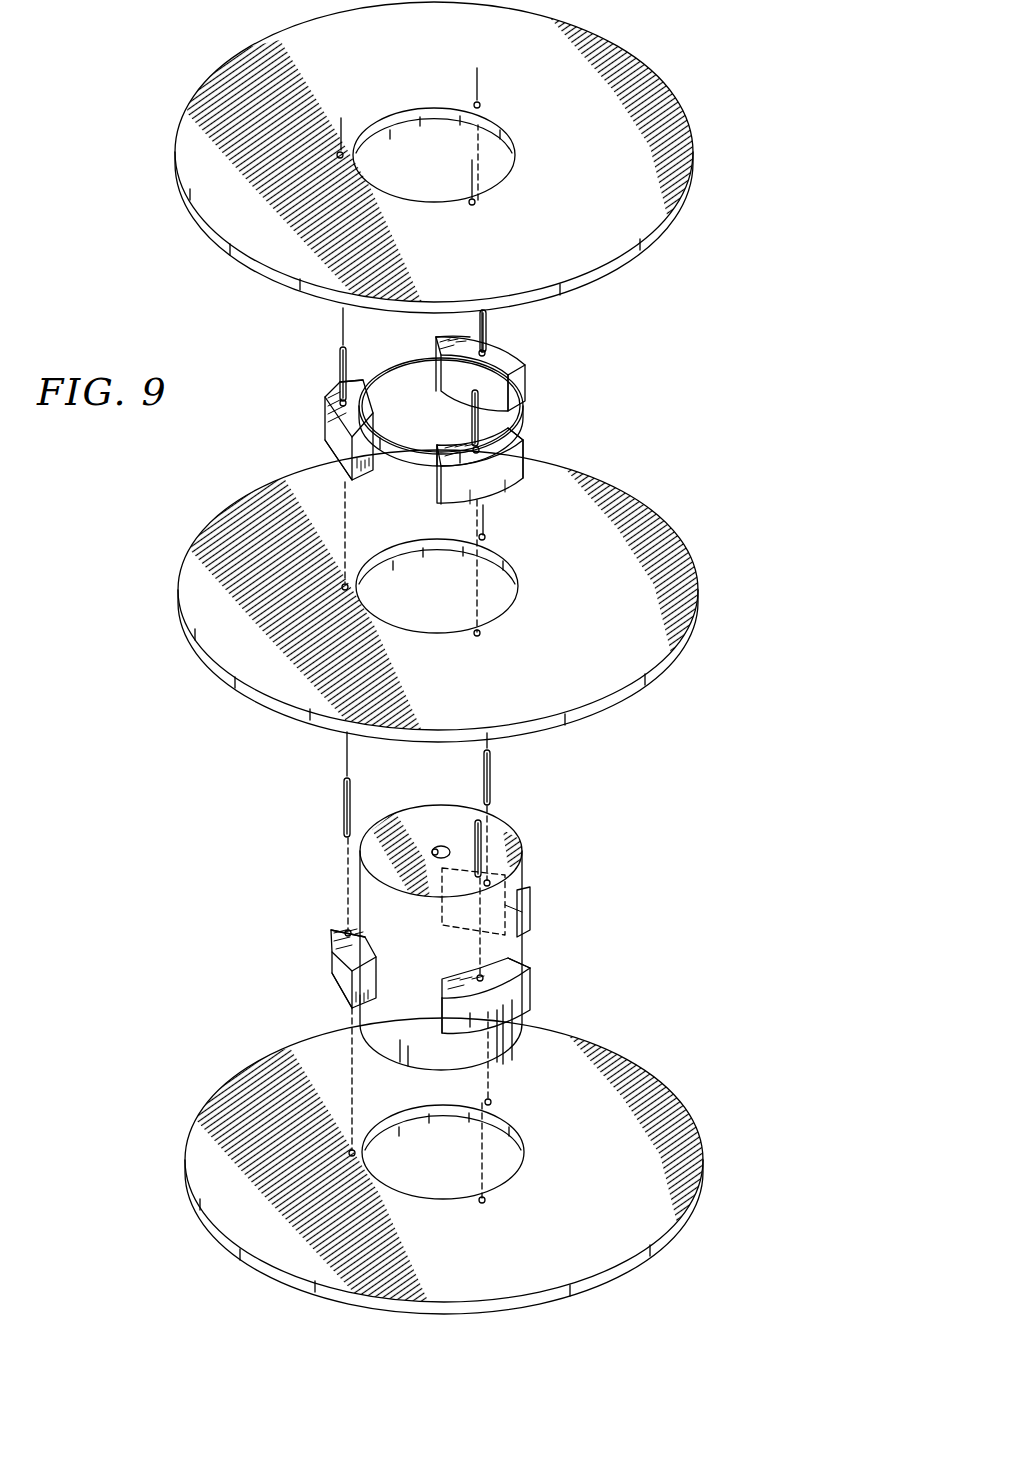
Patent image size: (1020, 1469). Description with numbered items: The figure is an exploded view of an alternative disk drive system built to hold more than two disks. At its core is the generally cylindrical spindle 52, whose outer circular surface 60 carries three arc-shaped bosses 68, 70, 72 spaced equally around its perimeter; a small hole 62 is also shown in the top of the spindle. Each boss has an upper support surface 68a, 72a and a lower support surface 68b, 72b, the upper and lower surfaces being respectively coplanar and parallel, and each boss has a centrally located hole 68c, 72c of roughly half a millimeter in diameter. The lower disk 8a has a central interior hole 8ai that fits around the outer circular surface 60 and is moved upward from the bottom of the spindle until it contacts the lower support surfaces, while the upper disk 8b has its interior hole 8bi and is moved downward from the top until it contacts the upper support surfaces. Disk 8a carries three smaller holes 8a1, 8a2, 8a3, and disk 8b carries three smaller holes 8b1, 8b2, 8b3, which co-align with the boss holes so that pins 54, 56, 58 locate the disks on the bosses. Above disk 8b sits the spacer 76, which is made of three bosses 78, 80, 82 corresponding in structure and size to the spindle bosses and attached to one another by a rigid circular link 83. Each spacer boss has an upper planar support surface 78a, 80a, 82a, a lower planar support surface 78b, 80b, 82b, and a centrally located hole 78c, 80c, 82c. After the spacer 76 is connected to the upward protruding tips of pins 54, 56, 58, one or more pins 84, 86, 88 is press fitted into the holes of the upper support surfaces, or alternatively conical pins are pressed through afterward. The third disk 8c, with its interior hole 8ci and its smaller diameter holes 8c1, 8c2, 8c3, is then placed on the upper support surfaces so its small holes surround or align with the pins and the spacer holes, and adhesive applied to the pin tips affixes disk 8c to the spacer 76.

The lower disk 8a is at (674, 1085).
The upper disk 8b is at (670, 515).
The third disk 8c is at (655, 90).
The interior hole of disk 8a 8ai is at (439, 1201).
The interior hole of disk 8b 8bi is at (435, 637).
The interior hole of disk 8c 8ci is at (430, 205).
The smaller hole of disk 8a 8a1 is at (349, 1152).
The smaller hole of disk 8a 8a2 is at (492, 1102).
The smaller hole of disk 8a 8a3 is at (486, 1200).
The smaller hole of disk 8b 8b1 is at (342, 586).
The smaller hole of disk 8b 8b2 is at (486, 536).
The smaller hole of disk 8b 8b3 is at (481, 634).
The smaller diameter hole of disk 8c 8c1 is at (337, 154).
The smaller diameter hole of disk 8c 8c2 is at (480, 104).
The smaller diameter hole of disk 8c 8c3 is at (476, 203).
The spindle 52 is at (618, 918).
The pin 54 is at (342, 796).
The pin 56 is at (492, 776).
The pin 58 is at (475, 826).
The outer circular surface 60 is at (524, 882).
The hole 62 is at (434, 850).
The boss 68 is at (330, 958).
The upper support surface 68a is at (340, 898).
The lower support surface 68b is at (343, 1000).
The centrally located hole 68c is at (346, 930).
The boss 70 is at (532, 914).
The boss 72 is at (534, 1000).
The upper support surface 72a is at (532, 962).
The lower support surface 72b is at (441, 1034).
The centrally located hole 72c is at (477, 976).
The spacer 76 is at (645, 393).
The boss 78 is at (326, 432).
The upper support surface 78a is at (355, 378).
The lower support surface 78b is at (333, 470).
The centrally located hole 78c is at (340, 401).
The boss 80 is at (530, 372).
The upper support surface 80a is at (447, 345).
The lower support surface 80b is at (528, 404).
The centrally located hole 80c is at (486, 353).
The boss 82 is at (532, 455).
The upper support surface 82a is at (440, 472).
The lower support surface 82b is at (512, 496).
The centrally located hole 82c is at (470, 450).
The rigid circular link 83 is at (420, 372).
The pin 84 is at (337, 352).
The pin 86 is at (484, 308).
The pin 88 is at (470, 418).